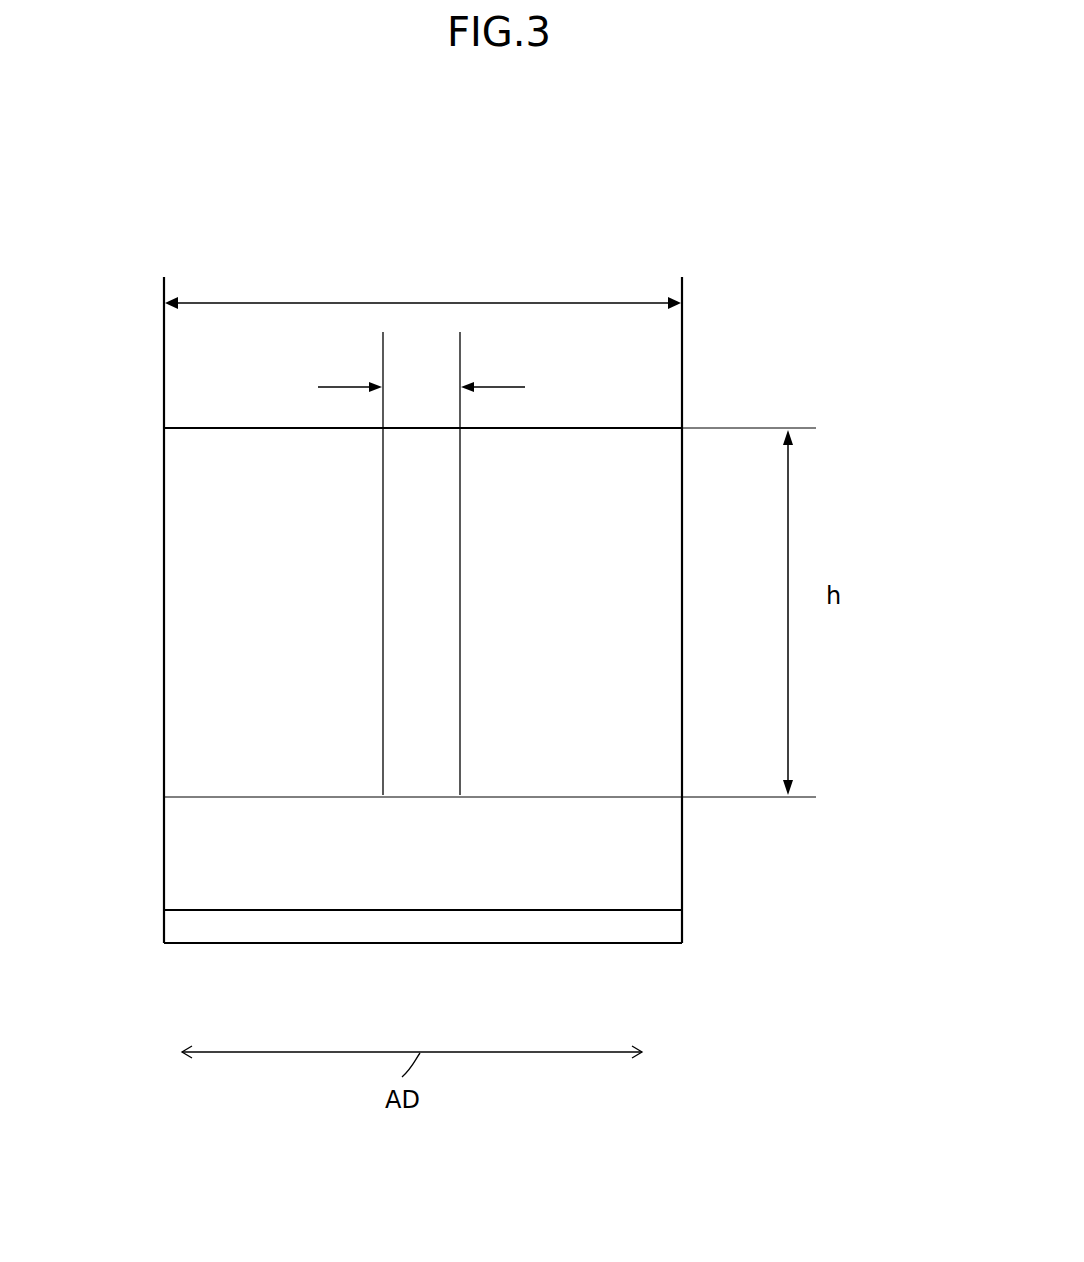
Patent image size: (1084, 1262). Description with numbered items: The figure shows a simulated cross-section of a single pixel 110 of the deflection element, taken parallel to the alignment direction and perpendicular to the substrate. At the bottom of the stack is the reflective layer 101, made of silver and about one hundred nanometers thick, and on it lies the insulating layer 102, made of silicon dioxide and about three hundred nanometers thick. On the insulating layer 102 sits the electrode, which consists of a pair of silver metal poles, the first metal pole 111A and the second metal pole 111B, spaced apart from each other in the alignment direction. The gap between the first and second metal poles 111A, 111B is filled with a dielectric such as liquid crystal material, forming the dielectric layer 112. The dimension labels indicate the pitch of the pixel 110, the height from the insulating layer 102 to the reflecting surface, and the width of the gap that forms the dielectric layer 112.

The pixel 110 is at (794, 291).
The first metal pole 111A is at (193, 550).
The second metal pole 111B is at (640, 448).
The dielectric layer 112 is at (400, 515).
The insulating layer 102 is at (670, 873).
The reflective layer 101 is at (673, 923).